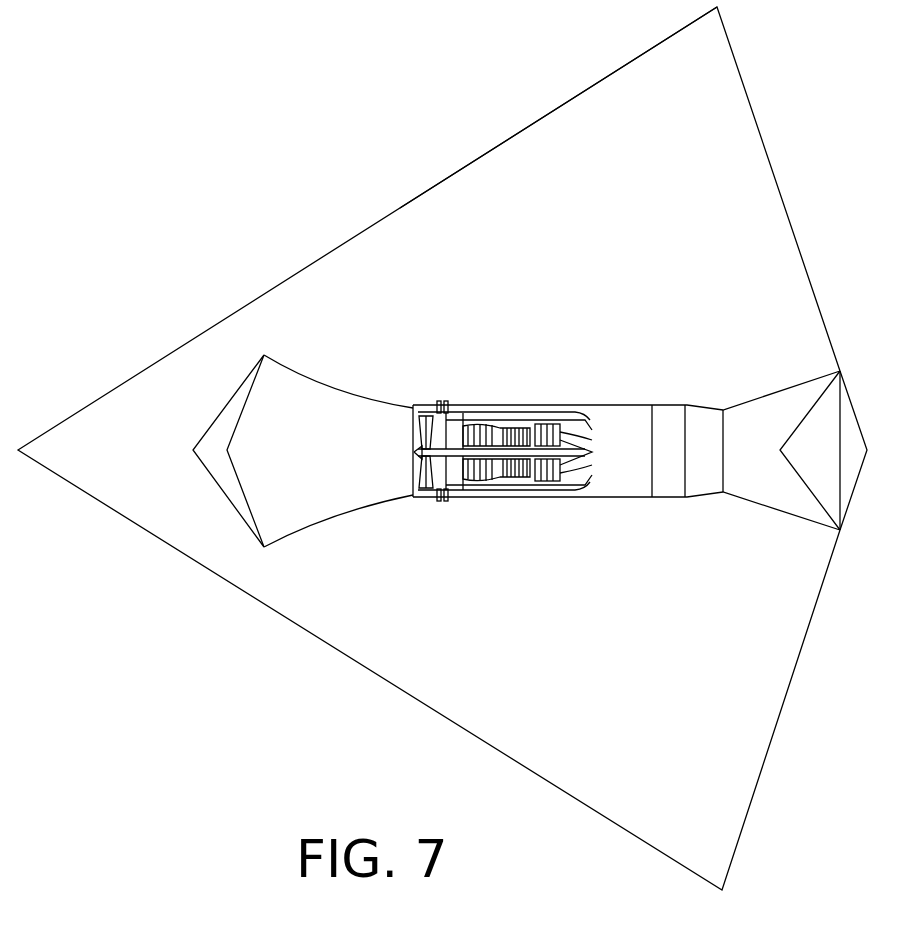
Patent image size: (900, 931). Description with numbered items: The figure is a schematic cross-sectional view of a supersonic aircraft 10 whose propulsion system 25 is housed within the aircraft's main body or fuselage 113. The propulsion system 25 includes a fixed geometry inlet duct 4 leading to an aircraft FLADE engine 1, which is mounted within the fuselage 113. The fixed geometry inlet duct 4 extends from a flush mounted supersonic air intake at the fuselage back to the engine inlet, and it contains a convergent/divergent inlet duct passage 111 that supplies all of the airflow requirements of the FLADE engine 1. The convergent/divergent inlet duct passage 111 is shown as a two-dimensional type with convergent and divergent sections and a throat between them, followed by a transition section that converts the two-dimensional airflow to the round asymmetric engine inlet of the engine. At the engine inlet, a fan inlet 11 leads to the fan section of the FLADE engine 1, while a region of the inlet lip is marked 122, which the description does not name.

The supersonic aircraft 10 is at (133, 680).
The main body or fuselage 113 is at (553, 110).
The inlet lip 122 is at (223, 426).
The fixed geometry inlet duct 4 is at (297, 370).
The convergent/divergent inlet duct passage 111 is at (280, 500).
The fan inlet 11 is at (413, 432).
The propulsion system 25 is at (383, 377).
The aircraft FLADE engine 1 is at (498, 395).